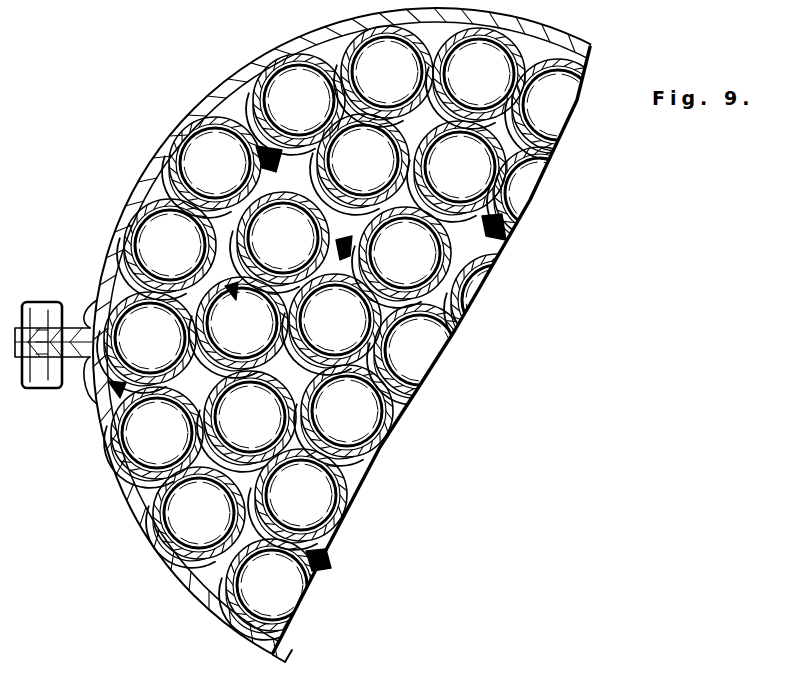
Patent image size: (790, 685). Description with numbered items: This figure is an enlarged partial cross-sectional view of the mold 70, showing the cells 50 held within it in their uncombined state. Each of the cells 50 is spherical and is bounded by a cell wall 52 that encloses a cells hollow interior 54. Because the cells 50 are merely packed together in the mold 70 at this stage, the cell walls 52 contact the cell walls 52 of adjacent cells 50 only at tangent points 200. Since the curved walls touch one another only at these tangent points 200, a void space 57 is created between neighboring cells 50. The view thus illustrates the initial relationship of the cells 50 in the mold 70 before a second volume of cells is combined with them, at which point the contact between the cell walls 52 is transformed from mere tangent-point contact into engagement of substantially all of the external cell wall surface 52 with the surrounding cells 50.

The cells 50 is at (398, 346).
The cell walls 52 is at (552, 162).
The cells hollow interior 54 is at (322, 329).
The void space 57 is at (270, 155).
The mold 70 is at (148, 166).
The tangent points 200 is at (155, 272).